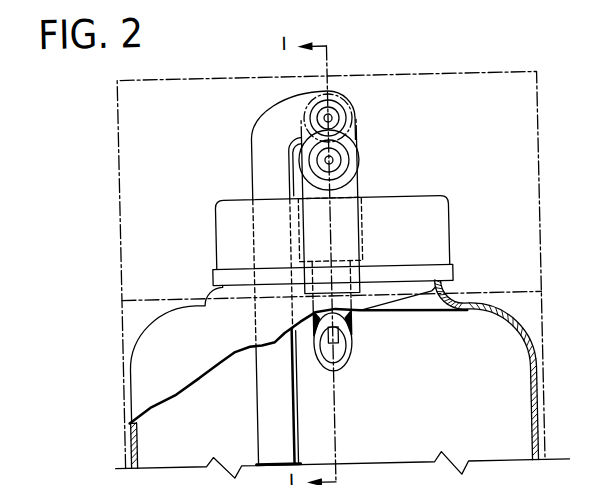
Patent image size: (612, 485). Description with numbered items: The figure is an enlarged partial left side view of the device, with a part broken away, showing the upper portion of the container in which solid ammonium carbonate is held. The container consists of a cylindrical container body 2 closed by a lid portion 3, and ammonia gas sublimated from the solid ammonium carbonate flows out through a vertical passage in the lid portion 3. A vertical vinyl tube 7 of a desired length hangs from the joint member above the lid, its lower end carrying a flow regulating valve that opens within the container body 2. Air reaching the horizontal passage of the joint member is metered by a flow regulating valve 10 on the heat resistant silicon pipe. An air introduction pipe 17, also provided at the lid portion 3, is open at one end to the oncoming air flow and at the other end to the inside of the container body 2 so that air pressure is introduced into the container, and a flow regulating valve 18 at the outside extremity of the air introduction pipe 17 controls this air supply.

The cylindrical container body 2 is at (528, 342).
The lid portion 3 is at (446, 247).
The vertical vinyl tube 7 is at (338, 355).
The flow regulating valve 10 is at (332, 160).
The air introduction pipe 17 is at (265, 164).
The flow regulating valve 18 is at (332, 118).